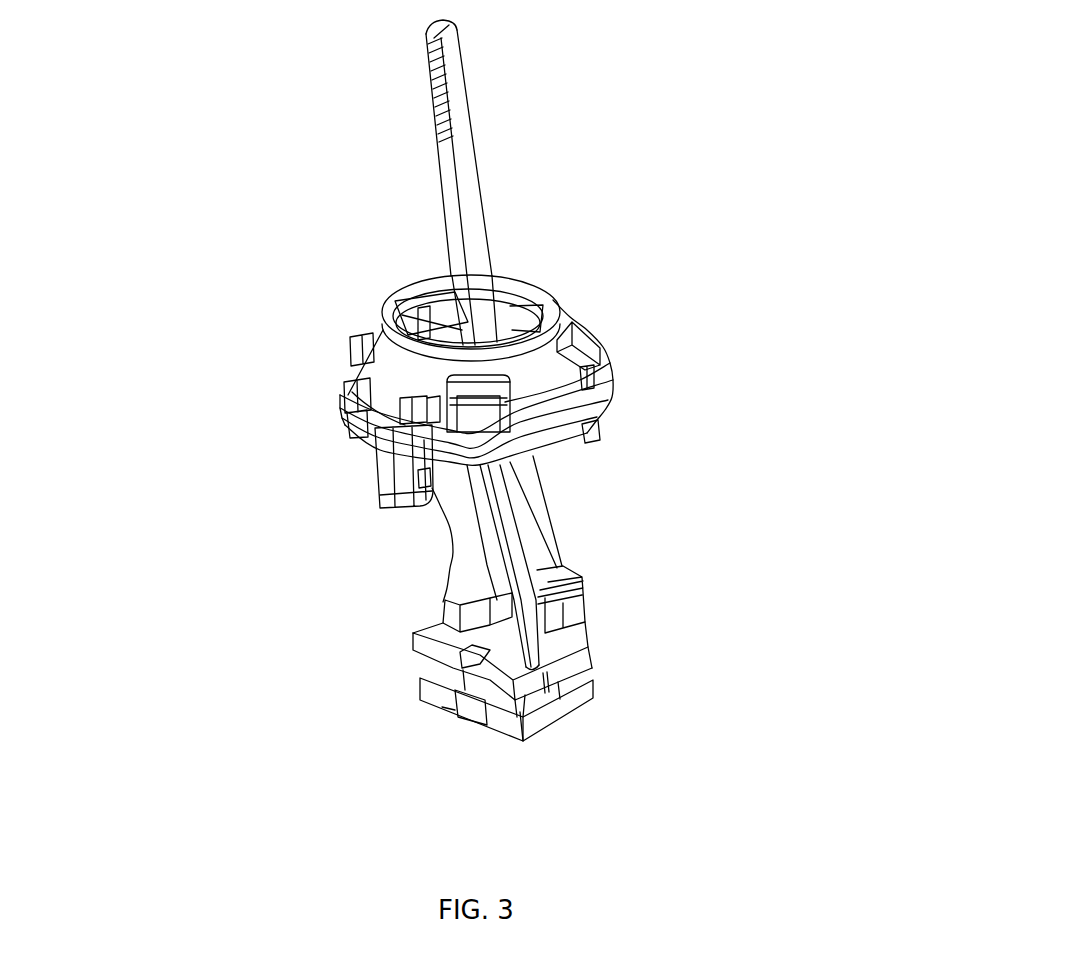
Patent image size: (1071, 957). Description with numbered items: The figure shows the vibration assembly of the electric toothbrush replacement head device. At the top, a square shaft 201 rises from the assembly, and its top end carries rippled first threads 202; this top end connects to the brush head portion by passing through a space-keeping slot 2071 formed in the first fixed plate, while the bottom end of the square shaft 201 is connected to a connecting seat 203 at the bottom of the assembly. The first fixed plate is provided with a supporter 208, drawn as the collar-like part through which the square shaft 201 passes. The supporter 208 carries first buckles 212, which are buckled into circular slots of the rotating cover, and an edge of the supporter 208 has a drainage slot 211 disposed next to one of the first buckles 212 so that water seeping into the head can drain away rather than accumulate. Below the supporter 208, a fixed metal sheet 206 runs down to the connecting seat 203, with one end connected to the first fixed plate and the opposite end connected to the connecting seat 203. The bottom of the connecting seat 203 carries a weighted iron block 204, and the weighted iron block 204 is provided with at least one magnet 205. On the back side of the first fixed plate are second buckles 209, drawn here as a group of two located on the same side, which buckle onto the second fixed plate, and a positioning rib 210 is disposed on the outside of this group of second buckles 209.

The square shaft 201 is at (480, 193).
The rippled first threads 202 is at (474, 77).
The connecting seat 203 is at (575, 622).
The weighted iron block 204 is at (550, 698).
The magnet 205 is at (522, 740).
The fixed metal sheet 206 is at (513, 568).
The space-keeping slot 2071 is at (420, 310).
The supporter 208 is at (543, 374).
The second buckles 209 is at (400, 484).
The positioning rib 210 is at (380, 459).
The drainage slot 211 is at (365, 413).
The first buckles 212 is at (368, 349).